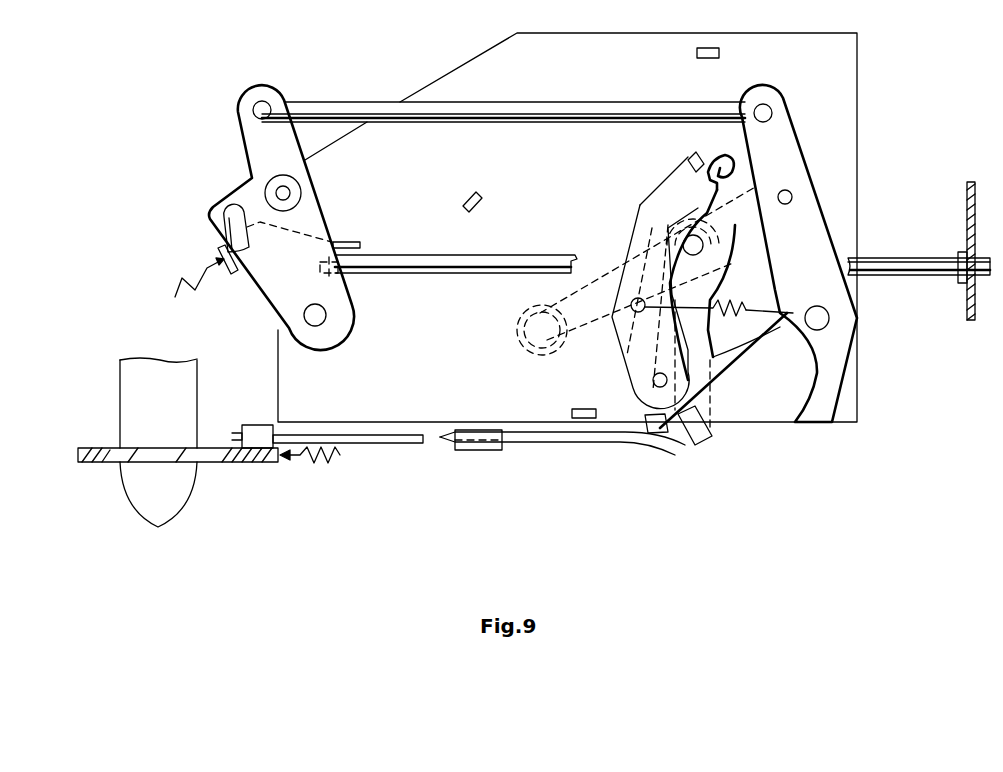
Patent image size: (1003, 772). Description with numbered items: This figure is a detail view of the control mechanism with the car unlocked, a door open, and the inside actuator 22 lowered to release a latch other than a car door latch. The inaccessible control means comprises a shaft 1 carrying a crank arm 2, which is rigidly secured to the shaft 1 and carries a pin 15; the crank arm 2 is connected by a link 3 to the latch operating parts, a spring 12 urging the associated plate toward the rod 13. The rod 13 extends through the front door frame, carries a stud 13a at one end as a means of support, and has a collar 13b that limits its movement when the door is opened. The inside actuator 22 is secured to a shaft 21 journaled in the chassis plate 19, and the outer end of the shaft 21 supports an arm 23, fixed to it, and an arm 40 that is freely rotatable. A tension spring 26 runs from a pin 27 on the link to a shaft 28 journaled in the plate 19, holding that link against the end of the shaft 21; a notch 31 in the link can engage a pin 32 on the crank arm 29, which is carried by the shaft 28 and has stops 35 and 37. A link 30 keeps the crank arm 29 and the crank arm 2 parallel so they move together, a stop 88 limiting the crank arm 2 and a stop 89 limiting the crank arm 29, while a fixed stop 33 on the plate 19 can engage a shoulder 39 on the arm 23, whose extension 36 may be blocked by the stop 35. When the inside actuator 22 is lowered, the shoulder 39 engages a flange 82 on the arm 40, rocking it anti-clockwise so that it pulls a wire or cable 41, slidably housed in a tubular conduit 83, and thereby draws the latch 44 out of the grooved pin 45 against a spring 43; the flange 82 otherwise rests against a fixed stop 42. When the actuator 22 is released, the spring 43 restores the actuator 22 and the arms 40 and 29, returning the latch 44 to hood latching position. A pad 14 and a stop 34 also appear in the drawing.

The shaft 1 is at (326, 316).
The crank arm 2 is at (290, 156).
The link 3 is at (224, 222).
The spring 12 is at (190, 270).
The rod 13 is at (420, 256).
The stud 13a is at (318, 264).
The collar 13b is at (960, 283).
The pad 14 is at (237, 272).
The pin 15 is at (290, 193).
The plate 19 is at (833, 63).
The shaft 21 is at (700, 237).
The inside actuator 22 is at (556, 308).
The arm 23 is at (712, 282).
The tension spring 26 is at (783, 312).
The pin 27 is at (630, 313).
The shaft 28 is at (829, 320).
The crank arm 29 is at (660, 205).
The link 30 is at (433, 110).
The notch 31 is at (732, 178).
The pin 32 is at (792, 197).
The fixed stop 33 is at (719, 53).
The stop 34 is at (360, 245).
The stop 35 is at (763, 305).
The extension 36 is at (738, 370).
The stop 37 is at (824, 393).
The shoulder 39 is at (648, 409).
The arm 40 is at (712, 418).
The wire or cable 41 is at (627, 440).
The fixed stop 42 is at (586, 409).
The spring 43 is at (310, 470).
The latch 44 is at (272, 465).
The pin 45 is at (175, 455).
The flange 82 is at (690, 444).
The tubular conduit 83 is at (478, 450).
The stop 88 is at (482, 201).
The stop 89 is at (688, 157).